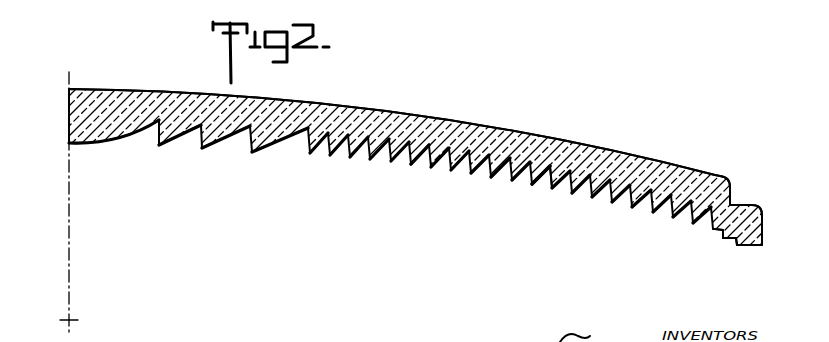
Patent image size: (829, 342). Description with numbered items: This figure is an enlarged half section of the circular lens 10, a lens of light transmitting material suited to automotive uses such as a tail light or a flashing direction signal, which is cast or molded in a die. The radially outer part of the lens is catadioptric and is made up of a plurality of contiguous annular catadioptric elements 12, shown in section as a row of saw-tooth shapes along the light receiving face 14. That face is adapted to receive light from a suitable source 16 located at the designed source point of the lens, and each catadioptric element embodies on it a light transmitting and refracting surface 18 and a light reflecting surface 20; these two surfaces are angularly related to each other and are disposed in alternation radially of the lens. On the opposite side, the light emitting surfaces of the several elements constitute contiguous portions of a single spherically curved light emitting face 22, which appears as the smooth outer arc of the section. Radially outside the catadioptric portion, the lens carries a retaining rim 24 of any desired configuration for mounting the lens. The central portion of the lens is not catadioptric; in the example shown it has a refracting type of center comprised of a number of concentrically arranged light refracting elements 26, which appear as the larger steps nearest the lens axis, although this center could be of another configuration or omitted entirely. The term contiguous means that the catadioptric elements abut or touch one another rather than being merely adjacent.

The lens 10 is at (625, 203).
The annular catadioptric elements 12 is at (637, 189).
The light receiving face 14 is at (427, 164).
The light source 16 is at (73, 316).
The light transmitting and refracting surface 18 is at (543, 167).
The light reflecting surface 20 is at (548, 171).
The spherically curved light emitting face 22 is at (547, 106).
The retaining rim 24 is at (748, 246).
The light refracting elements 26 is at (252, 152).